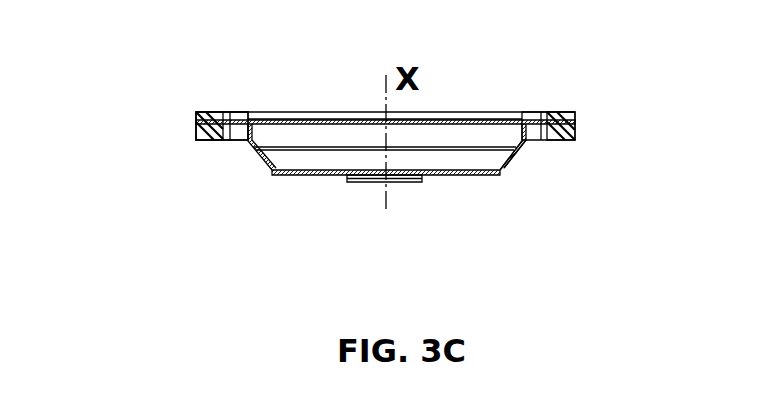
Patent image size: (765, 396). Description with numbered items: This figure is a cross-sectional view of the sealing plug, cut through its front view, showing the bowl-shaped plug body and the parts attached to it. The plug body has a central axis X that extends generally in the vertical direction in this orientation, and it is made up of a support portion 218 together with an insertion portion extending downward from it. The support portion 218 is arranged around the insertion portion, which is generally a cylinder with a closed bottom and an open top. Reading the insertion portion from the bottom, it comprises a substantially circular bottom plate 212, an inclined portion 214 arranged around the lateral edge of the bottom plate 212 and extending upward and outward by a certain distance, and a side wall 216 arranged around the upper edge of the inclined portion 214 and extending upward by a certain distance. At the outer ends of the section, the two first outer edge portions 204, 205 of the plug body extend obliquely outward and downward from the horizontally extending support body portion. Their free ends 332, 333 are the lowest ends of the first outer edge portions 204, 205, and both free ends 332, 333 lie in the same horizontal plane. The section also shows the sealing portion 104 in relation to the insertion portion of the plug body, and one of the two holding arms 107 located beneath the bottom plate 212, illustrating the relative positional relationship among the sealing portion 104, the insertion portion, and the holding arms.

The sealing portion 104 is at (197, 141).
The holding arm 107 is at (367, 182).
The first outer edge portion 204 is at (207, 113).
The first outer edge portion 205 is at (567, 113).
The bottom plate 212 is at (433, 176).
The inclined portion 214 is at (507, 168).
The side wall 216 is at (527, 145).
The support portion 218 is at (533, 120).
The free end 332 is at (197, 127).
The free end 333 is at (575, 125).